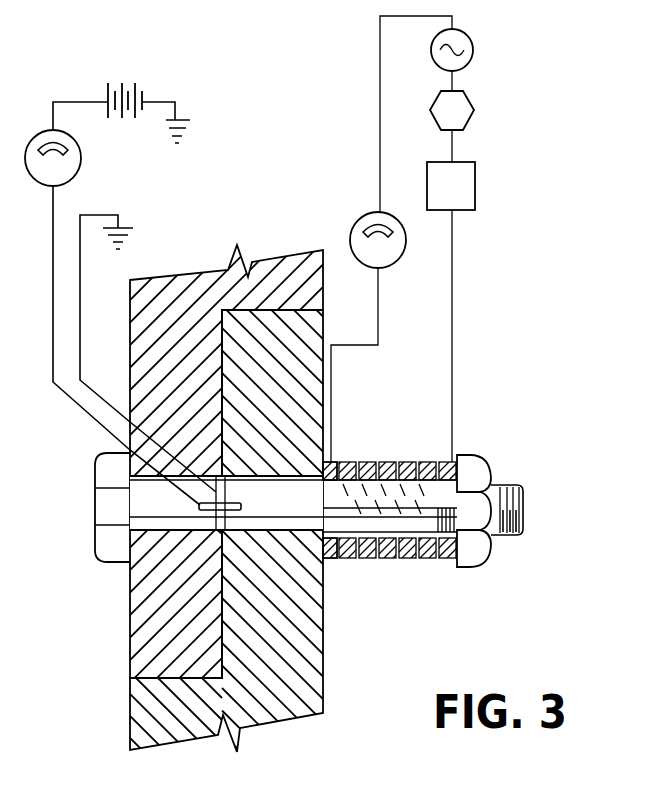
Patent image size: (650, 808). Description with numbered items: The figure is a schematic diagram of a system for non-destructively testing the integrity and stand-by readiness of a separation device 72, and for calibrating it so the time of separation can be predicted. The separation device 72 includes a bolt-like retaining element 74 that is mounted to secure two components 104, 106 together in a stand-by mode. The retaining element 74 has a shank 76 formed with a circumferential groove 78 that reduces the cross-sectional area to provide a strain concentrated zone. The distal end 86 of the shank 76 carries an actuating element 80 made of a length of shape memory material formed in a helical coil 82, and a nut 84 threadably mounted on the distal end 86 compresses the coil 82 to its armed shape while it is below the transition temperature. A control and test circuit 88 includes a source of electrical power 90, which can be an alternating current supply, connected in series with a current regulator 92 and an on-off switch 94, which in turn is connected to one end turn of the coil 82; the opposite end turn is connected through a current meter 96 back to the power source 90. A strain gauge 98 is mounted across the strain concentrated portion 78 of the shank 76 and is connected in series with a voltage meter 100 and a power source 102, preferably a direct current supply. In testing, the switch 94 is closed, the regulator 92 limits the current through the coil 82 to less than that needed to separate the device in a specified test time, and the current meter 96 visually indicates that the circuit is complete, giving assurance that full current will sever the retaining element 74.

The separation device 72 is at (505, 461).
The retaining element 74 is at (88, 523).
The shank 76 is at (389, 523).
The circumferential groove 78 is at (300, 438).
The actuating element 80 is at (419, 562).
The helical coil 82 is at (412, 460).
The nut 84 is at (492, 560).
The distal end 86 is at (523, 504).
The control and test circuit 88 is at (497, 245).
The source of electrical power 90 is at (473, 50).
The current regulator 92 is at (474, 112).
The on-off switch 94 is at (474, 210).
The current meter 96 is at (406, 258).
The strain gauge 98 is at (200, 507).
The voltage meter 100 is at (81, 160).
The power source 102 is at (137, 80).
The component 104 is at (128, 647).
The component 106 is at (323, 648).